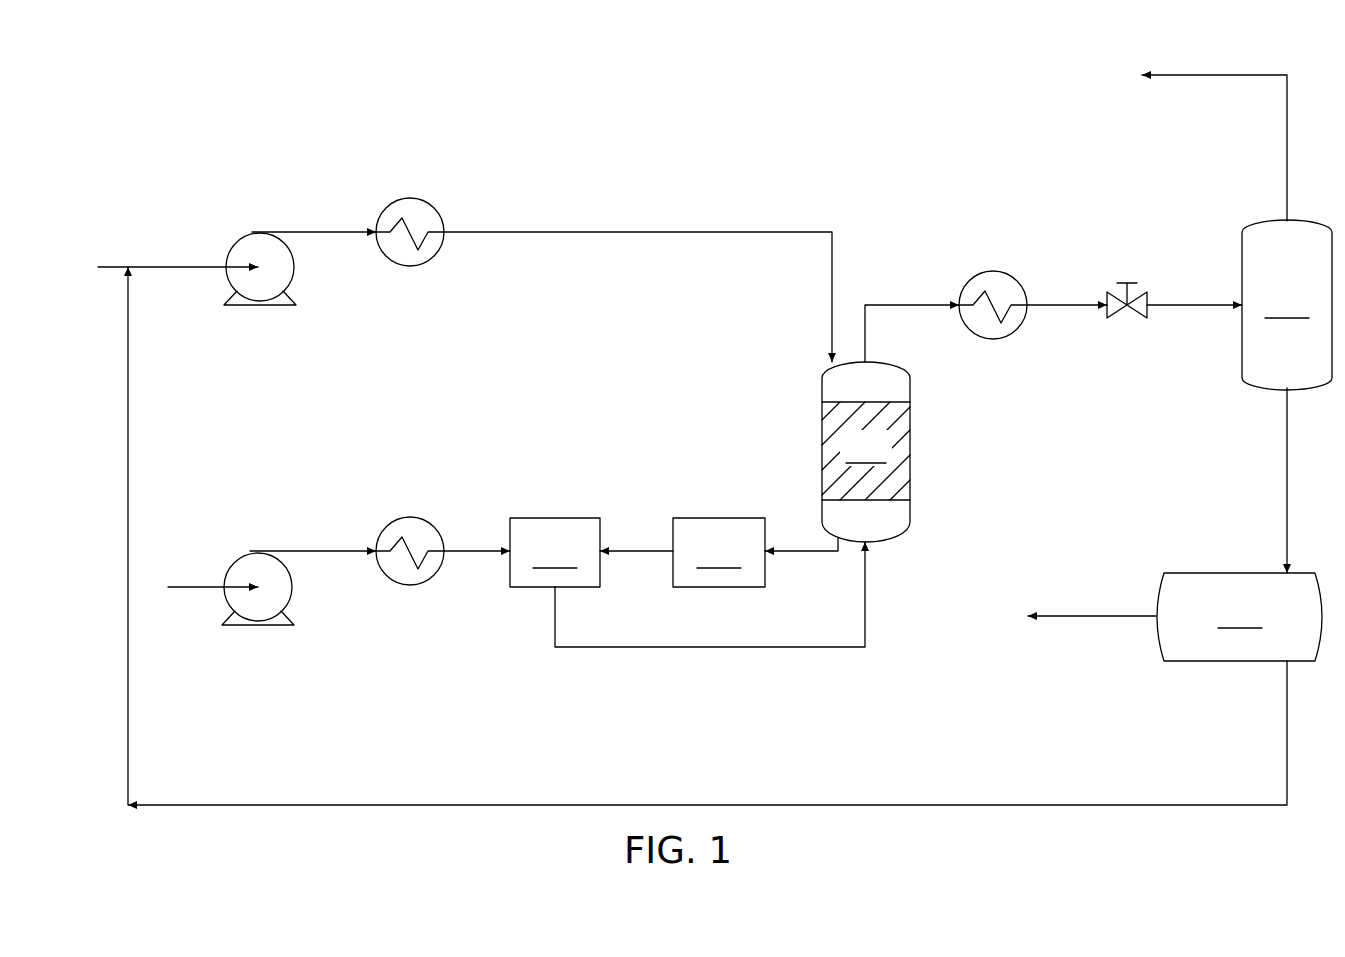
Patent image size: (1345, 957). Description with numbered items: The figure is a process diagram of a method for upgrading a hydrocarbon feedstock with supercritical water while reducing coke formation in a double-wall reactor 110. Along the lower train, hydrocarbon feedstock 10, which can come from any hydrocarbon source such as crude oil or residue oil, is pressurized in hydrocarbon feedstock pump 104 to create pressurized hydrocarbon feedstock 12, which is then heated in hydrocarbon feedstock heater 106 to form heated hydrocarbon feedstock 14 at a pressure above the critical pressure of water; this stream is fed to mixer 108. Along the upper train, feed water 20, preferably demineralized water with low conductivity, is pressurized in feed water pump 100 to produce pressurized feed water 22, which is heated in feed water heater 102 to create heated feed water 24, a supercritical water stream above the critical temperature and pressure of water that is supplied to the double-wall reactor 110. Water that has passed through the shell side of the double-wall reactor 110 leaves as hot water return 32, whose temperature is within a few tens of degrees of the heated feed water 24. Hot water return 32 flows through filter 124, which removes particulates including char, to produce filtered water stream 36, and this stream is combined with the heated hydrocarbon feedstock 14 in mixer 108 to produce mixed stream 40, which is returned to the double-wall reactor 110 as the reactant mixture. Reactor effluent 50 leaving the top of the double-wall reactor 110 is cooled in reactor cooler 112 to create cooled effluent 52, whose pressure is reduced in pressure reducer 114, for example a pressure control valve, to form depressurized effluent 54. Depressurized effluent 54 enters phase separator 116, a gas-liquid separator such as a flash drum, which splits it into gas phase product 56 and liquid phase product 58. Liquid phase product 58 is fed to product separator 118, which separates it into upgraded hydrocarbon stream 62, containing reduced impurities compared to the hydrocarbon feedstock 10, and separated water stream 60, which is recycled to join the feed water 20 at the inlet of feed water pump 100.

The hydrocarbon feedstock 10 is at (212, 586).
The pressurized hydrocarbon feedstock 12 is at (328, 550).
The heated hydrocarbon feedstock 14 is at (475, 550).
The feed water 20 is at (191, 265).
The pressurized feed water 22 is at (327, 231).
The heated feed water 24 is at (530, 231).
The hot water return 32 is at (795, 550).
The filtered water stream 36 is at (637, 550).
The mixed stream 40 is at (703, 648).
The reactor effluent 50 is at (910, 304).
The cooled effluent 52 is at (1060, 307).
The depressurized effluent 54 is at (1192, 304).
The gas phase product 56 is at (1225, 76).
The liquid phase product 58 is at (1286, 455).
The separated water stream 60 is at (1192, 804).
The upgraded hydrocarbon stream 62 is at (1072, 615).
The feed water pump 100 is at (242, 306).
The feed water heater 102 is at (405, 268).
The hydrocarbon feedstock pump 104 is at (241, 626).
The hydrocarbon feedstock heater 106 is at (405, 587).
The mixer 108 is at (555, 552).
The double-wall reactor 110 is at (866, 452).
The reactor cooler 112 is at (991, 271).
The pressure reducer 114 is at (1127, 316).
The phase separator 116 is at (1287, 305).
The product separator 118 is at (1239, 617).
The filter 124 is at (719, 552).